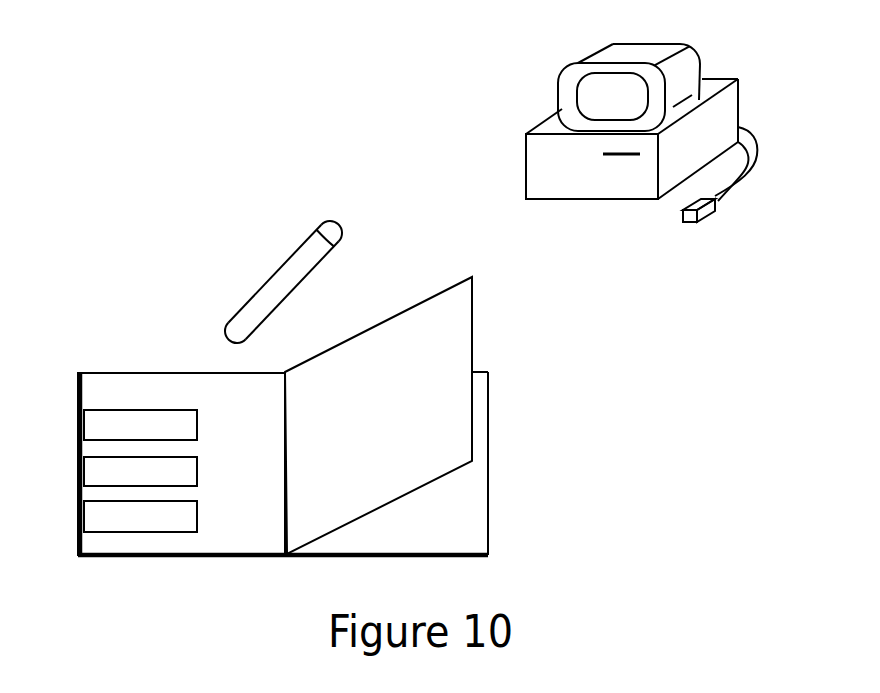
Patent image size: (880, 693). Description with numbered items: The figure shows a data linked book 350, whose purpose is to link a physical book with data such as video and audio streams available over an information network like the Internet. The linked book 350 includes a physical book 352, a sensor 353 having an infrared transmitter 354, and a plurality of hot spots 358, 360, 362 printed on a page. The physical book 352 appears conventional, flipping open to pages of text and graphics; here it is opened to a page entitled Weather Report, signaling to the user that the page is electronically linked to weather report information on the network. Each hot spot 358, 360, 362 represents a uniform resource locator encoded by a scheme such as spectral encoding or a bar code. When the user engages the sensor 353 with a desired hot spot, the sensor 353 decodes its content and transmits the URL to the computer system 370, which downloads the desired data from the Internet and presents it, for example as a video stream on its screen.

The data linked book 350 is at (108, 242).
The physical book 352 is at (76, 412).
The sensor 353 is at (296, 250).
The infrared transmitter 354 is at (340, 235).
The hot spot 358 is at (197, 425).
The hot spot 360 is at (197, 470).
The hot spot 362 is at (197, 515).
The computer system 370 is at (722, 77).